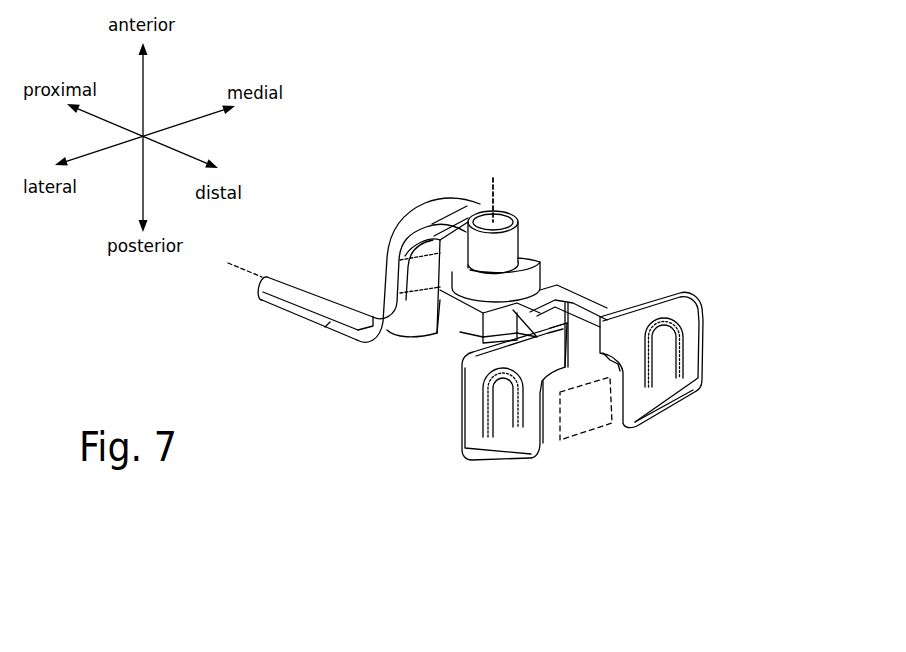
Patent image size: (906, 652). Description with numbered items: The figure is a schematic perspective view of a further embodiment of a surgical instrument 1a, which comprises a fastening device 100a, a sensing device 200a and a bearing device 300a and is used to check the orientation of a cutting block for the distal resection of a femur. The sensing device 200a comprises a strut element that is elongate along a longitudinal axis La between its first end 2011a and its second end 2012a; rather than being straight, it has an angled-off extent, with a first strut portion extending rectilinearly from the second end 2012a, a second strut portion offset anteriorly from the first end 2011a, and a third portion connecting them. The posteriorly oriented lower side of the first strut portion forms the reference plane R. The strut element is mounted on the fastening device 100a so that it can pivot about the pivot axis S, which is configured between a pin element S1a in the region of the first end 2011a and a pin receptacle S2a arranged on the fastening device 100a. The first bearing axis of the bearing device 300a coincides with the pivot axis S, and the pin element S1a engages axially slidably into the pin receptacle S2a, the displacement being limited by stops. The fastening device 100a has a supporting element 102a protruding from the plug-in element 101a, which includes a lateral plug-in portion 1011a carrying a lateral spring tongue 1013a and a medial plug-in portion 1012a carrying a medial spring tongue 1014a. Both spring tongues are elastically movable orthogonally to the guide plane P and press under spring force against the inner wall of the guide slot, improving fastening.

The surgical instrument 1a is at (567, 118).
The sensing device 200a is at (364, 178).
The first end 2011a is at (510, 217).
The second end 2012a is at (292, 283).
The bearing device 300a is at (542, 230).
The fastening device 100a is at (651, 255).
The supporting element 102a is at (597, 279).
The plug-in element 101a is at (719, 302).
The lateral plug-in portion 1011a is at (509, 448).
The medial plug-in portion 1012a is at (658, 405).
The lateral spring tongue 1013a is at (502, 413).
The medial spring tongue 1014a is at (668, 357).
The guide plane P is at (590, 415).
The pivot axis S is at (493, 178).
The pin element S1a is at (437, 334).
The pin receptacle S2a is at (460, 332).
The reference plane R is at (325, 327).
The longitudinal axis La is at (232, 266).